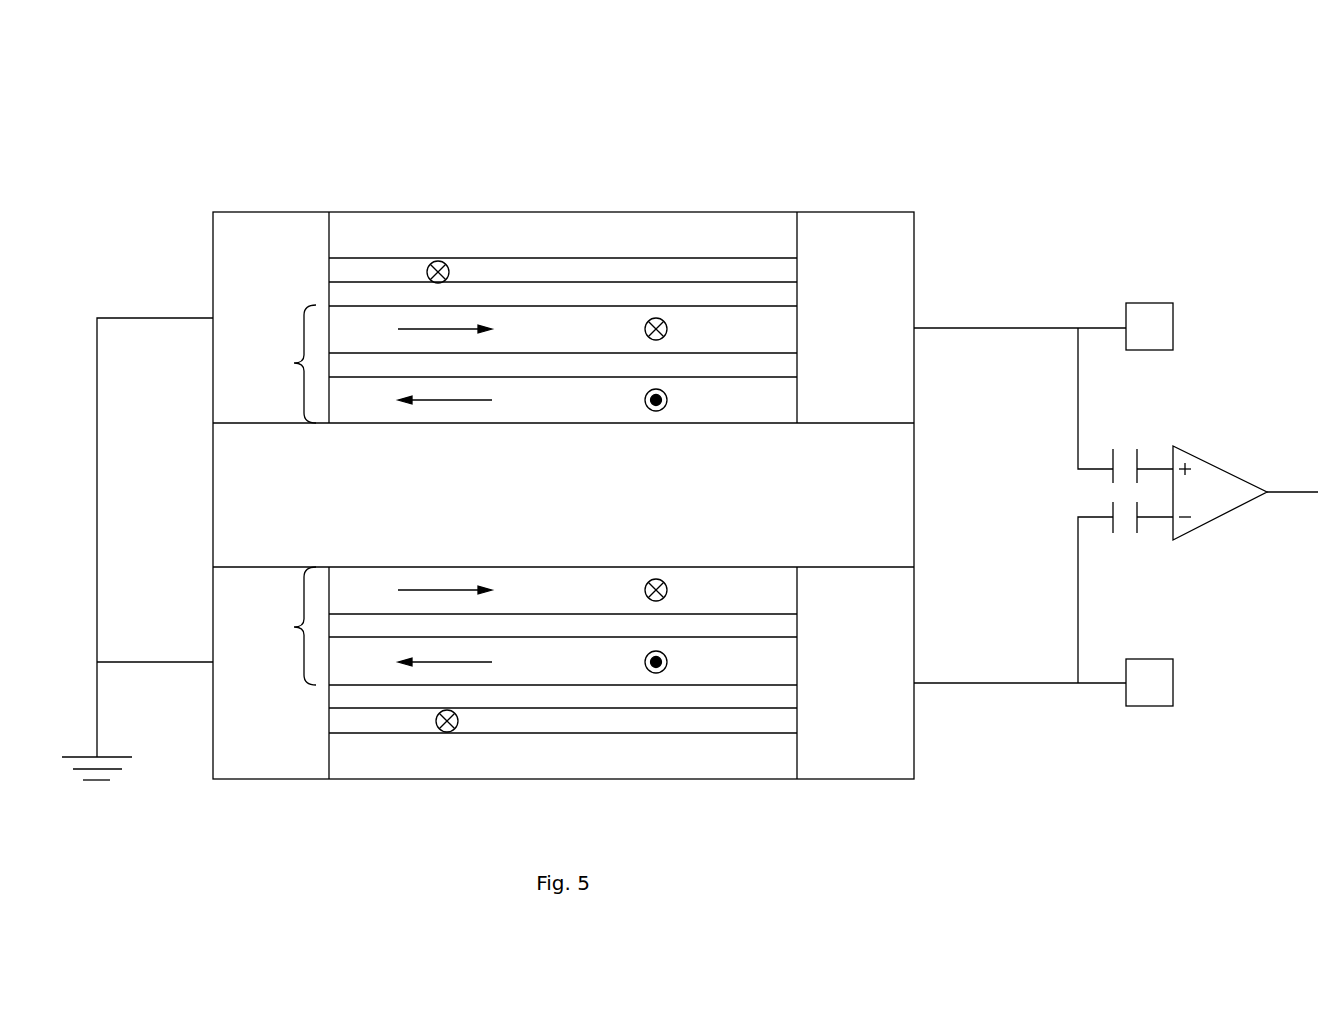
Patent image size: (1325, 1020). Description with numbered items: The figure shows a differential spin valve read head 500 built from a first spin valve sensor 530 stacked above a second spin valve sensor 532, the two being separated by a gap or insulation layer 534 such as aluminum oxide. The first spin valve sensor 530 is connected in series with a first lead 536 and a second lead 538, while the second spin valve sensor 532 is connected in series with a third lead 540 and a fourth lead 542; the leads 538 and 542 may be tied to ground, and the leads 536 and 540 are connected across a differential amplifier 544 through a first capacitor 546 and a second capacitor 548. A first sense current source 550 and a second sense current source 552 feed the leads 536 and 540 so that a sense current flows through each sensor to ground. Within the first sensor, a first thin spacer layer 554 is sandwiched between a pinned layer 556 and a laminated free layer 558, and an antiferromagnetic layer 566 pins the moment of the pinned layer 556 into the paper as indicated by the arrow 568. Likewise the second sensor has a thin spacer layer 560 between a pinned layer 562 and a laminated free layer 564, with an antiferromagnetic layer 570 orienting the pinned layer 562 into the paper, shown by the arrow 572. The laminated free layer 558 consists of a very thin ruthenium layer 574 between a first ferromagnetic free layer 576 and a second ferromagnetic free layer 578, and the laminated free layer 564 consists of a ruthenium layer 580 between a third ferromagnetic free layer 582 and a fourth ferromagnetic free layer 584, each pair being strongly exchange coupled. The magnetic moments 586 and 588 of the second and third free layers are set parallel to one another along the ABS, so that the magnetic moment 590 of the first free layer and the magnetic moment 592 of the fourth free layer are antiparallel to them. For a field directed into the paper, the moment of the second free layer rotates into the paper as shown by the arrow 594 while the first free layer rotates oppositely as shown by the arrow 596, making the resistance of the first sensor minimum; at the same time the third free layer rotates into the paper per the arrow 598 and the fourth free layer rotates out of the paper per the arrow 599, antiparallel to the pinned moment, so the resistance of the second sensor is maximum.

The differential spin valve read head 500 is at (125, 110).
The first spin valve sensor 530 is at (479, 302).
The second spin valve sensor 532 is at (472, 671).
The gap or insulation layer 534 is at (888, 497).
The first lead 536 is at (1080, 410).
The second lead 538 is at (133, 318).
The third lead 540 is at (1080, 597).
The fourth lead 542 is at (130, 662).
The differential amplifier 544 is at (1210, 462).
The first capacitor 546 is at (1128, 447).
The second capacitor 548 is at (1128, 527).
The first sense current source 550 is at (1173, 325).
The second sense current source 552 is at (1152, 705).
The first thin spacer layer 554 is at (623, 294).
The pinned layer 556 is at (469, 268).
The laminated free layer 558 is at (288, 368).
The thin spacer layer 560 is at (507, 690).
The pinned layer 562 is at (632, 715).
The laminated free layer 564 is at (285, 618).
The antiferromagnetic layer 566 is at (395, 218).
The arrow 568 is at (439, 261).
The antiferromagnetic layer 570 is at (732, 757).
The arrow 572 is at (439, 729).
The ruthenium layer 574 is at (672, 363).
The first ferromagnetic free layer 576 is at (442, 412).
The second ferromagnetic free layer 578 is at (732, 332).
The ruthenium layer 580 is at (688, 623).
The third ferromagnetic free layer 582 is at (417, 575).
The fourth ferromagnetic free layer 584 is at (723, 658).
The magnetic moment 586 is at (435, 330).
The magnetic moment 588 is at (447, 588).
The magnetic moment 590 is at (452, 402).
The magnetic moment 592 is at (430, 660).
The arrow 594 is at (663, 318).
The arrow 596 is at (653, 411).
The arrow 598 is at (656, 579).
The arrow 599 is at (657, 673).